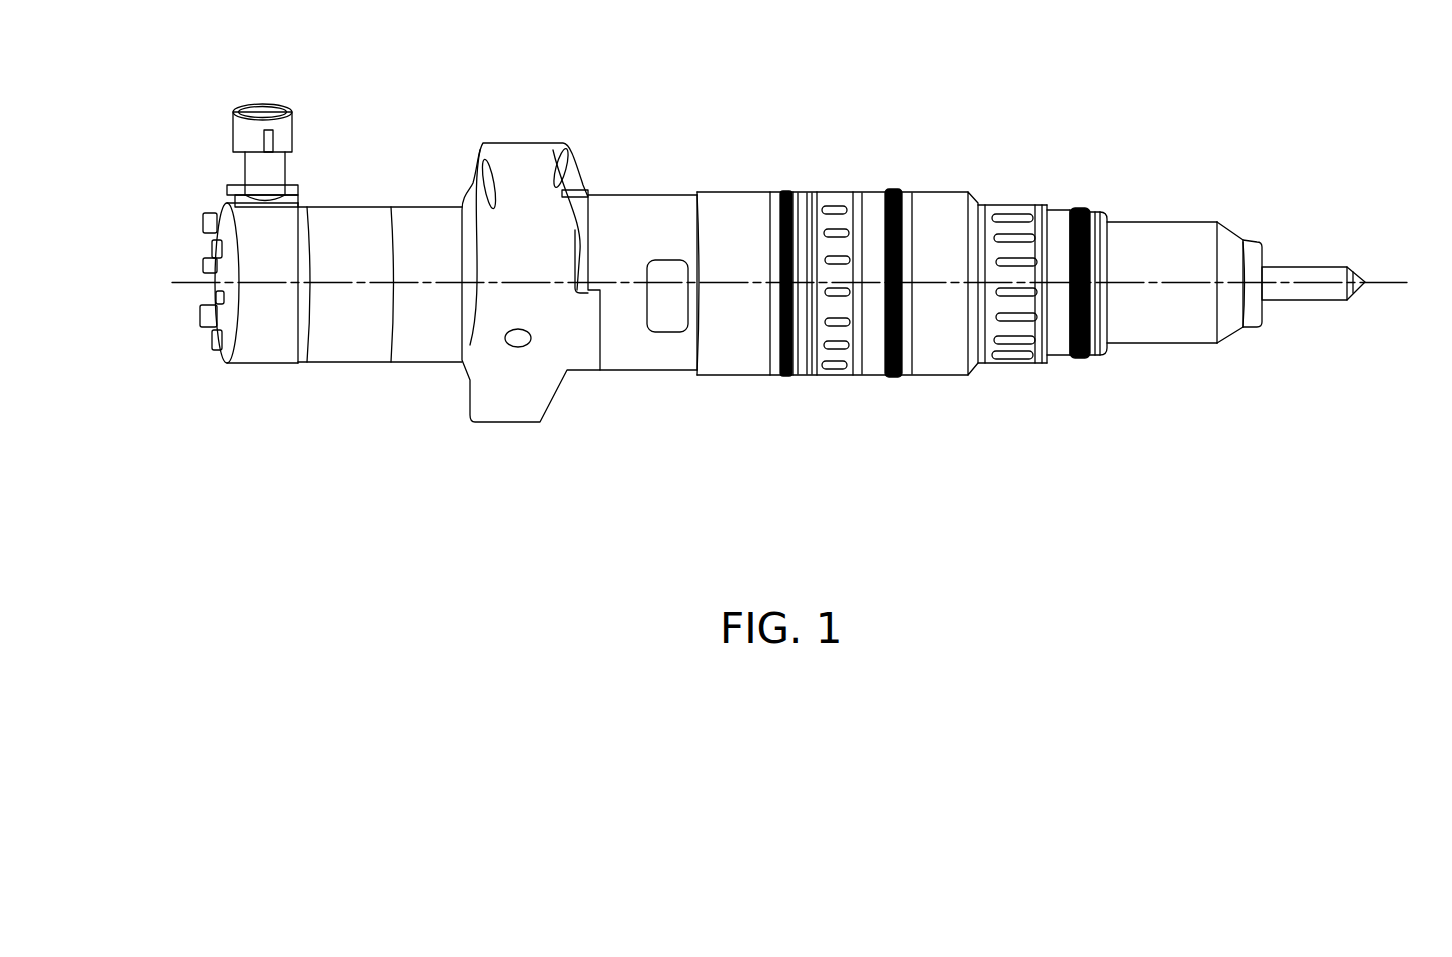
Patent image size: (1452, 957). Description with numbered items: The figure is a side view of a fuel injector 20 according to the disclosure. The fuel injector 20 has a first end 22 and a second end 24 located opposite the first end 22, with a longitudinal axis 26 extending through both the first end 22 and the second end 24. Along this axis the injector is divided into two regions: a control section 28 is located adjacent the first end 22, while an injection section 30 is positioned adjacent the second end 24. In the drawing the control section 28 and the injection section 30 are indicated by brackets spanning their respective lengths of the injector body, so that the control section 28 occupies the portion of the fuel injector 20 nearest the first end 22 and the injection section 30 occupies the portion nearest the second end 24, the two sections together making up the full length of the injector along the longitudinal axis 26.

The fuel injector 20 is at (1064, 94).
The first end 22 is at (204, 225).
The second end 24 is at (1364, 283).
The longitudinal axis 26 is at (1393, 283).
The control section 28 is at (903, 396).
The injection section 30 is at (903, 396).